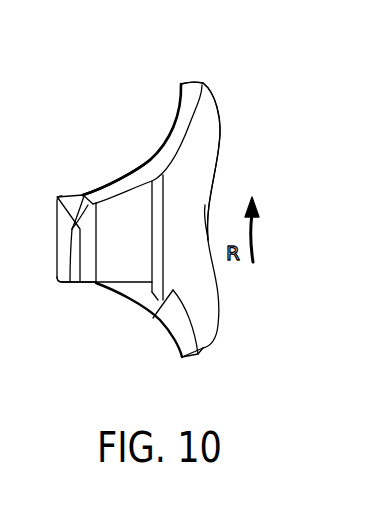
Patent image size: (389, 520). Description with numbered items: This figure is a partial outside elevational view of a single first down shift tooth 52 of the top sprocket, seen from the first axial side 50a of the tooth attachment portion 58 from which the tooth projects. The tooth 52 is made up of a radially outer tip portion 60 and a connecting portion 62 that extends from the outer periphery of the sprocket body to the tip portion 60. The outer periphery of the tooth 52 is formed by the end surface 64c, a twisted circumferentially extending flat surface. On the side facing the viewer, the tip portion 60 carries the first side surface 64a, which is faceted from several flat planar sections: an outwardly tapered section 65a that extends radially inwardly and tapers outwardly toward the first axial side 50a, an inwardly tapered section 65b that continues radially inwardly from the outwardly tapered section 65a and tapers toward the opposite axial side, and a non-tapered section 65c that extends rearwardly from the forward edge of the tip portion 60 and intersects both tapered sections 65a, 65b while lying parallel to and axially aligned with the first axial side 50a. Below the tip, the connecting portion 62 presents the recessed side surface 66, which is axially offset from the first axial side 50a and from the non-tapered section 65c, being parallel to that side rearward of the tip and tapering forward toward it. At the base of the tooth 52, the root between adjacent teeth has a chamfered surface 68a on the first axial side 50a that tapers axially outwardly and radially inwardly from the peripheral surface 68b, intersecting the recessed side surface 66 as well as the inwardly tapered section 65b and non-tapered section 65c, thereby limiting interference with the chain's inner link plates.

The first tooth 52 is at (117, 108).
The tooth attachment portion 58 is at (232, 130).
The first axial side 50a is at (193, 200).
The tip portion 60 is at (69, 180).
The connecting portion 62 is at (123, 168).
The end surface 64c is at (56, 230).
The recessed side surface 66 is at (139, 241).
The outwardly tapered section 65a is at (60, 249).
The inwardly tapered section 65b is at (88, 272).
The non-tapered section 65c is at (70, 282).
The first side surface 64a is at (133, 323).
The chamfered surface 68a is at (192, 332).
The peripheral surface 68b is at (170, 337).